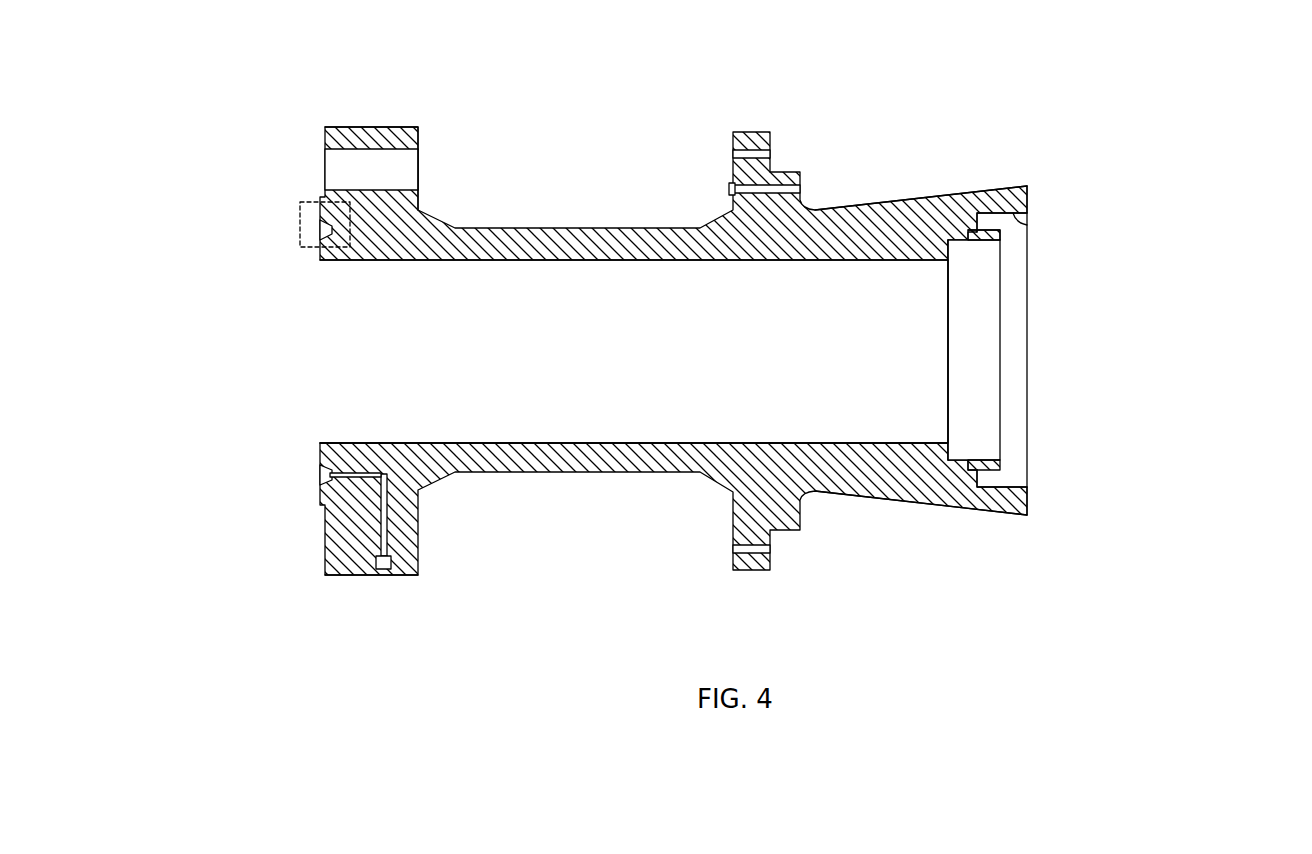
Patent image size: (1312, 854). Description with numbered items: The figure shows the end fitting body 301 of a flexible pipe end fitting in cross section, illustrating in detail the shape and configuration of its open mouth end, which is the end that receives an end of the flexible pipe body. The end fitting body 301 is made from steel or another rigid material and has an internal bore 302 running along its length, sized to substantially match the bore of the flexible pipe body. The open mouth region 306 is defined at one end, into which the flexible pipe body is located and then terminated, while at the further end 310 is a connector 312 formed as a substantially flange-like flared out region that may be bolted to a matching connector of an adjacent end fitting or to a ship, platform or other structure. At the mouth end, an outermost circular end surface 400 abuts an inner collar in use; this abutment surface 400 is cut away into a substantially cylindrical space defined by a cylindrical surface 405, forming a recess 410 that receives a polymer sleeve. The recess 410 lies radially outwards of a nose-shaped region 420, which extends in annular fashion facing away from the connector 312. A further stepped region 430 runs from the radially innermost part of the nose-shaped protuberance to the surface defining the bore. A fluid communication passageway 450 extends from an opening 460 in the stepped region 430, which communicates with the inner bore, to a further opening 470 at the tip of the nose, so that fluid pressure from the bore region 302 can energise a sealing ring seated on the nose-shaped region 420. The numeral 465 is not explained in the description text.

The end fitting body 301 is at (540, 652).
The internal bore 302 is at (545, 326).
The open mouth region 306 is at (1130, 345).
The further end 310 is at (232, 465).
The connector 312 is at (385, 127).
The outermost circular end surface 400 is at (1030, 500).
The cylindrical surface 405 is at (1027, 228).
The recess 410 is at (1013, 482).
The nose-shaped region 420 is at (1007, 460).
The further stepped region 430 is at (955, 257).
The fluid communication passageway 450 is at (958, 232).
The opening 460 is at (975, 255).
The body wall 465 is at (463, 443).
The further opening 470 is at (1000, 240).